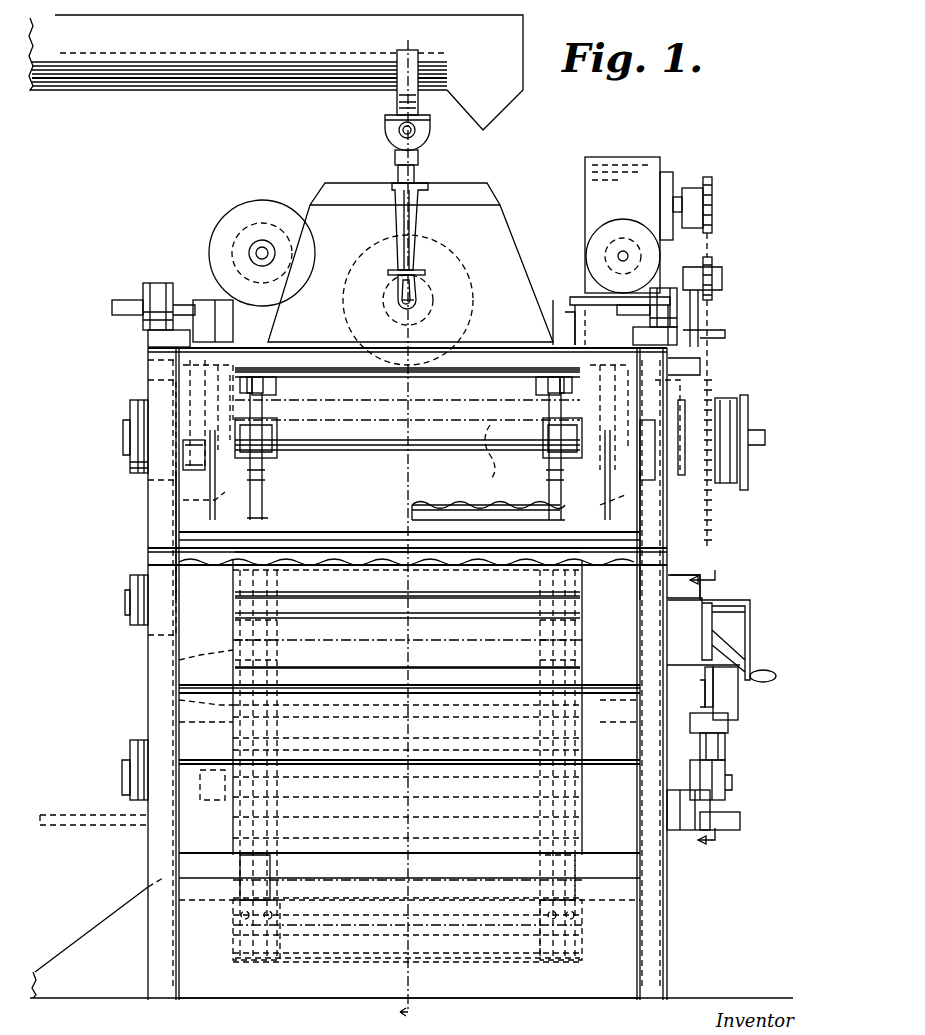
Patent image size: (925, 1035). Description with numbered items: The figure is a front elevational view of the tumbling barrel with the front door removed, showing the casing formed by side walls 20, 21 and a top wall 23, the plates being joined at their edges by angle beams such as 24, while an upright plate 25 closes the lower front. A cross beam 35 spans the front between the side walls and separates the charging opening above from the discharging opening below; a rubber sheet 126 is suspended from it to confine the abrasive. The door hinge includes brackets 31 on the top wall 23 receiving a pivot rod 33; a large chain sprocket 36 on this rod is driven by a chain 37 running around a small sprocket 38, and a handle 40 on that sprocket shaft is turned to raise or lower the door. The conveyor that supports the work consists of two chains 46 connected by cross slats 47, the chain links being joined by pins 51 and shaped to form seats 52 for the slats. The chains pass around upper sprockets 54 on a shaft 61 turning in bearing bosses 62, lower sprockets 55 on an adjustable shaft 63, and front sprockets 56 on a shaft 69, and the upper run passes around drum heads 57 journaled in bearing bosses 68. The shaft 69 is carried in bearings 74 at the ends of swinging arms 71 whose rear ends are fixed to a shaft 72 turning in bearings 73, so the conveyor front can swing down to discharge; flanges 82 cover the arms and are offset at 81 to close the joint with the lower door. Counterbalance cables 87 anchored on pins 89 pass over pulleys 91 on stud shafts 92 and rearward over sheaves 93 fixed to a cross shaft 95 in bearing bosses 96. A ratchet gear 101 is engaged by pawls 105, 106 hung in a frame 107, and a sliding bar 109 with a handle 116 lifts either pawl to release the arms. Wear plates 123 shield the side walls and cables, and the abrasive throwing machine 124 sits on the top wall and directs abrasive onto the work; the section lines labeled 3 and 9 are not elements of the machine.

The section line 3 is at (370, 1012).
The section arrow 9 is at (713, 709).
The side wall 20 is at (176, 518).
The side wall 21 is at (640, 521).
The top wall 23 is at (568, 345).
The angle beam 24 is at (148, 362).
The upright plate 25 is at (330, 990).
The bracket 31 is at (648, 327).
The pivot rod 33 is at (183, 300).
The cross beam 35 is at (371, 540).
The chain sprocket 36 is at (700, 335).
The chain 37 is at (708, 555).
The small sprocket 38 is at (712, 598).
The handle 40 is at (752, 650).
The chain 46 is at (535, 405).
The cross slat 47 is at (472, 975).
The pin 51 is at (598, 365).
The seat 52 is at (548, 377).
The upper sprocket 54 is at (561, 478).
The lower sprocket 55 is at (580, 975).
The front sprocket 56 is at (545, 627).
The drum head 57 is at (560, 505).
The shaft 61 is at (347, 445).
The bearing boss 62 is at (740, 385).
The shaft 63 is at (640, 905).
The bearing boss 68 is at (740, 550).
The shaft 69 is at (179, 674).
The swinging arm 71 is at (645, 722).
The shaft 72 is at (732, 778).
The bearing 73 is at (740, 803).
The bearing 74 is at (645, 700).
The offset 81 is at (447, 688).
The flange 82 is at (580, 592).
The cable 87 is at (615, 500).
The pin 89 is at (205, 780).
The pulley 91 is at (662, 480).
The stud shaft 92 is at (265, 465).
The sheave 93 is at (618, 368).
The cross shaft 95 is at (490, 480).
The bearing boss 96 is at (655, 405).
The ratchet gear 101 is at (740, 820).
The pawl 105 is at (728, 724).
The pawl 106 is at (725, 745).
The frame 107 is at (738, 697).
The sliding bar 109 is at (705, 672).
The handle 116 is at (713, 672).
The wear plate 123 is at (595, 855).
The abrasive throwing machine 124 is at (500, 232).
The rubber sheet 126 is at (318, 550).